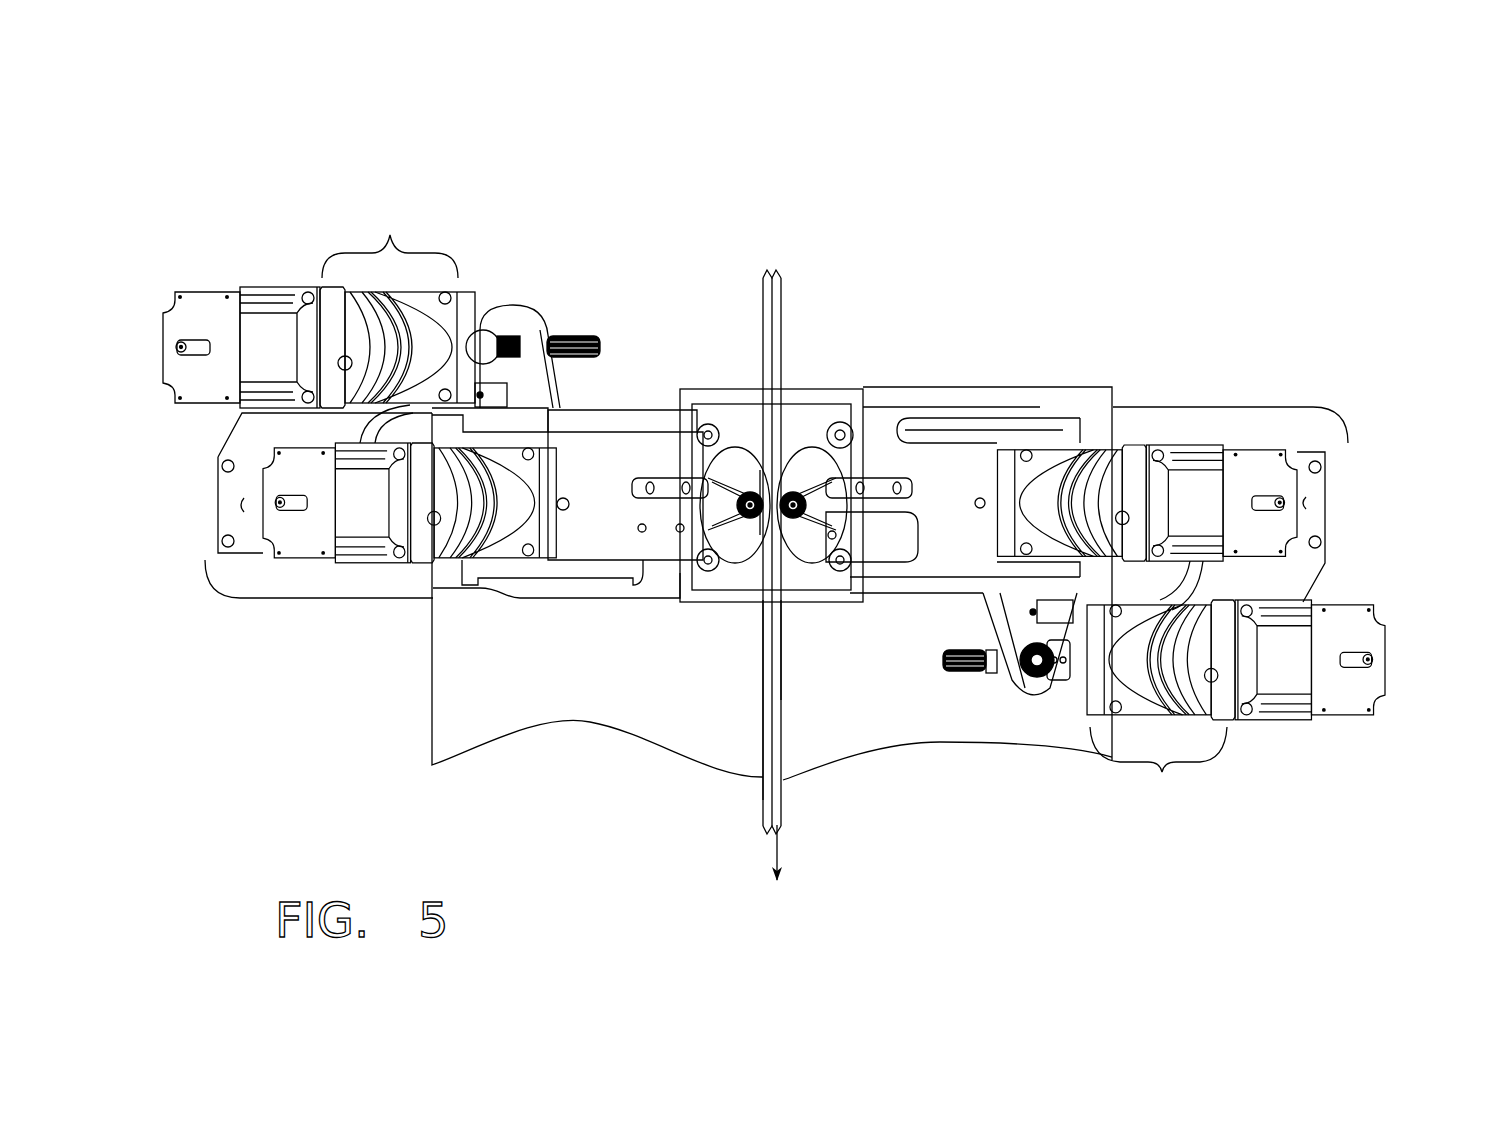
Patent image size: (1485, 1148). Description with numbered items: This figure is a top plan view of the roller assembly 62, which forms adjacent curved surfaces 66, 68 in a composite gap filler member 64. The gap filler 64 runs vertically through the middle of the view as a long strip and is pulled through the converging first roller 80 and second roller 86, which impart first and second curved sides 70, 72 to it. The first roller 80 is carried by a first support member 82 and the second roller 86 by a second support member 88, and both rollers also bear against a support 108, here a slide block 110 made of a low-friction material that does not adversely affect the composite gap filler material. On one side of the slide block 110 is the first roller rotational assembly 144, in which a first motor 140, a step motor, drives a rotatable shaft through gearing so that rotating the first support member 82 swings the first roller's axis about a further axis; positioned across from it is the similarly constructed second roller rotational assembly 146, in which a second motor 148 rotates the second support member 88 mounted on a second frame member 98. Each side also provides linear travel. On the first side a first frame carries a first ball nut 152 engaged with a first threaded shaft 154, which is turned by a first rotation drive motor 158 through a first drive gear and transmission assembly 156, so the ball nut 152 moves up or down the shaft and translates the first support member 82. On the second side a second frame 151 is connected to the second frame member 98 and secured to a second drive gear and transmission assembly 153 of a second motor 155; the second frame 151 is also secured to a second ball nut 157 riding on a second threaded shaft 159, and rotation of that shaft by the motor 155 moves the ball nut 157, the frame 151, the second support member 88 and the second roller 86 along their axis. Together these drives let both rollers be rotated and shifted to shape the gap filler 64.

The roller assembly 62 is at (1187, 152).
The composite gap filler member 64 is at (778, 308).
The curved surface 66 is at (781, 687).
The curved surface 68 is at (768, 655).
The first curved side 70 is at (784, 808).
The second curved side 72 is at (760, 807).
The first roller 80 is at (812, 470).
The first support member 82 is at (834, 502).
The second roller 86 is at (740, 543).
The second support member 88 is at (714, 512).
The second frame member 98 is at (598, 542).
The support 108 is at (750, 420).
The slide block 110 is at (788, 442).
The first motor 140 is at (1188, 505).
The first roller rotational assembly 144 is at (1113, 407).
The second roller rotational assembly 146 is at (463, 600).
The second motor 148 is at (292, 532).
The second frame 151 is at (557, 402).
The first ball nut 152 is at (983, 678).
The second drive gear and transmission assembly 153 is at (390, 236).
The first threaded shaft 154 is at (960, 672).
The second motor 155 is at (262, 332).
The first drive gear and transmission assembly 156 is at (1162, 772).
The second ball nut 157 is at (545, 330).
The first rotation drive motor 158 is at (1285, 658).
The second threaded shaft 159 is at (577, 333).